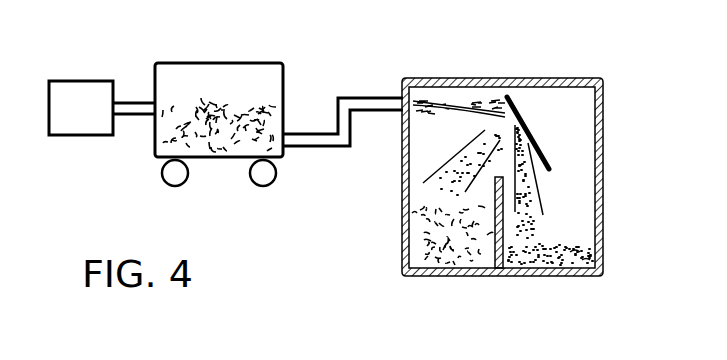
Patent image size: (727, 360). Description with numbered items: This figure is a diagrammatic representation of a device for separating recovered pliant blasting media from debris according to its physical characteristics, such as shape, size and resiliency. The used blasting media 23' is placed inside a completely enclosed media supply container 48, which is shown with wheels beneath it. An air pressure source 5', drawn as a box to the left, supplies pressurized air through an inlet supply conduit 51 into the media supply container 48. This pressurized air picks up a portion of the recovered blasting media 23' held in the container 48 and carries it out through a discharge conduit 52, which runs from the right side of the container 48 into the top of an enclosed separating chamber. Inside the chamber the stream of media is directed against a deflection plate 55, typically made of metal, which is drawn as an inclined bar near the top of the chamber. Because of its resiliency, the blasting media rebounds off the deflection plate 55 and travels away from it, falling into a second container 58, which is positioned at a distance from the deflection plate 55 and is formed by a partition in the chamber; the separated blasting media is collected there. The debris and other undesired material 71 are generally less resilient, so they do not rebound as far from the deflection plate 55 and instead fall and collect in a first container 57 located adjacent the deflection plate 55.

The air pressure source 5' is at (79, 134).
The inlet supply conduit 51 is at (137, 117).
The media supply container 48 is at (250, 62).
The used blasting media 23' is at (219, 161).
The discharge conduit 52 is at (357, 98).
The deflection plate 55 is at (530, 120).
The second container 58 is at (462, 213).
The first container 57 is at (567, 228).
The debris and other undesired material 71 is at (570, 256).